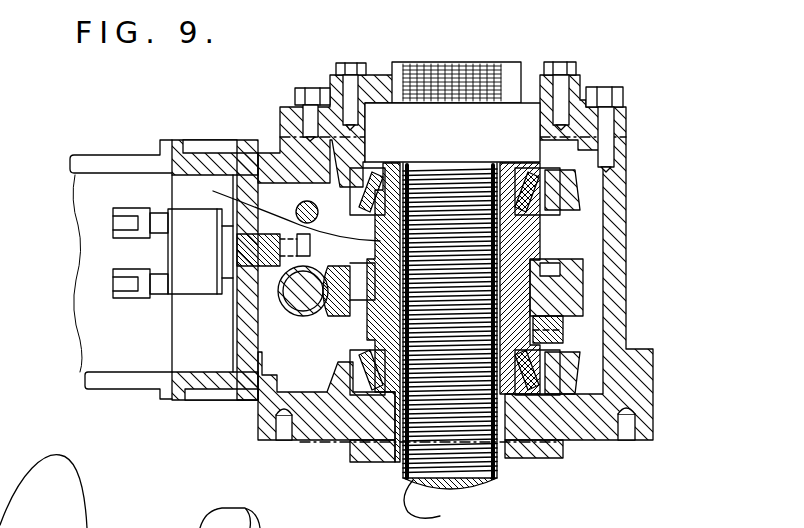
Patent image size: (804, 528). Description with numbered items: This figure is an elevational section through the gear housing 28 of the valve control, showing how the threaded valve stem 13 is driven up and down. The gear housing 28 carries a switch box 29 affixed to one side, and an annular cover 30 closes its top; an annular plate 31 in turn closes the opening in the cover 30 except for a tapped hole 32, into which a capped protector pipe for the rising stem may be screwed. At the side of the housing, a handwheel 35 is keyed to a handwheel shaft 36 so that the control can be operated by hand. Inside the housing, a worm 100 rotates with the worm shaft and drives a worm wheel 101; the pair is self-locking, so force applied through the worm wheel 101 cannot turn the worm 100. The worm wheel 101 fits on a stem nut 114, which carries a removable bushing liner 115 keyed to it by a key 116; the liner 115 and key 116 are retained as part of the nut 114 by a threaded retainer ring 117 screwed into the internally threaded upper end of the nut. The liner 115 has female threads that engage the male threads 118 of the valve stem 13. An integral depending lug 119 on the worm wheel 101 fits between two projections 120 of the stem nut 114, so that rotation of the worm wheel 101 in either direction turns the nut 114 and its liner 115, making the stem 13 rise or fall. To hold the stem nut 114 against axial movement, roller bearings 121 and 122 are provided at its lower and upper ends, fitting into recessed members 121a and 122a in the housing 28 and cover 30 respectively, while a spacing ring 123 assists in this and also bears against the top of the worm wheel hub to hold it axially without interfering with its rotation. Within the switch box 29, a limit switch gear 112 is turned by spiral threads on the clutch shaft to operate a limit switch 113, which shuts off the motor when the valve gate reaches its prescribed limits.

The valve stem 13 is at (495, 487).
The gear housing 28 is at (626, 216).
The switch box 29 is at (100, 160).
The annular cover 30 is at (625, 120).
The annular plate 31 is at (381, 75).
The tapped hole 32 is at (470, 76).
The handwheel 35 is at (88, 526).
The handwheel shaft 36 is at (297, 206).
The worm 100 is at (283, 306).
The worm wheel 101 is at (340, 318).
The limit switch gear 112 is at (298, 236).
The limit switch 113 is at (202, 262).
The stem nut 114 is at (537, 270).
The removable bushing liner 115 is at (383, 246).
The key 116 is at (511, 248).
The threaded retainer ring 117 is at (401, 168).
The male threads 118 is at (440, 516).
The depending lug 119 is at (566, 331).
The projections 120 is at (566, 323).
The roller bearing 121 is at (558, 383).
The recessed member 121a is at (554, 395).
The roller bearing 122 is at (575, 208).
The recessed member 122a is at (553, 192).
The spacing ring 123 is at (278, 211).